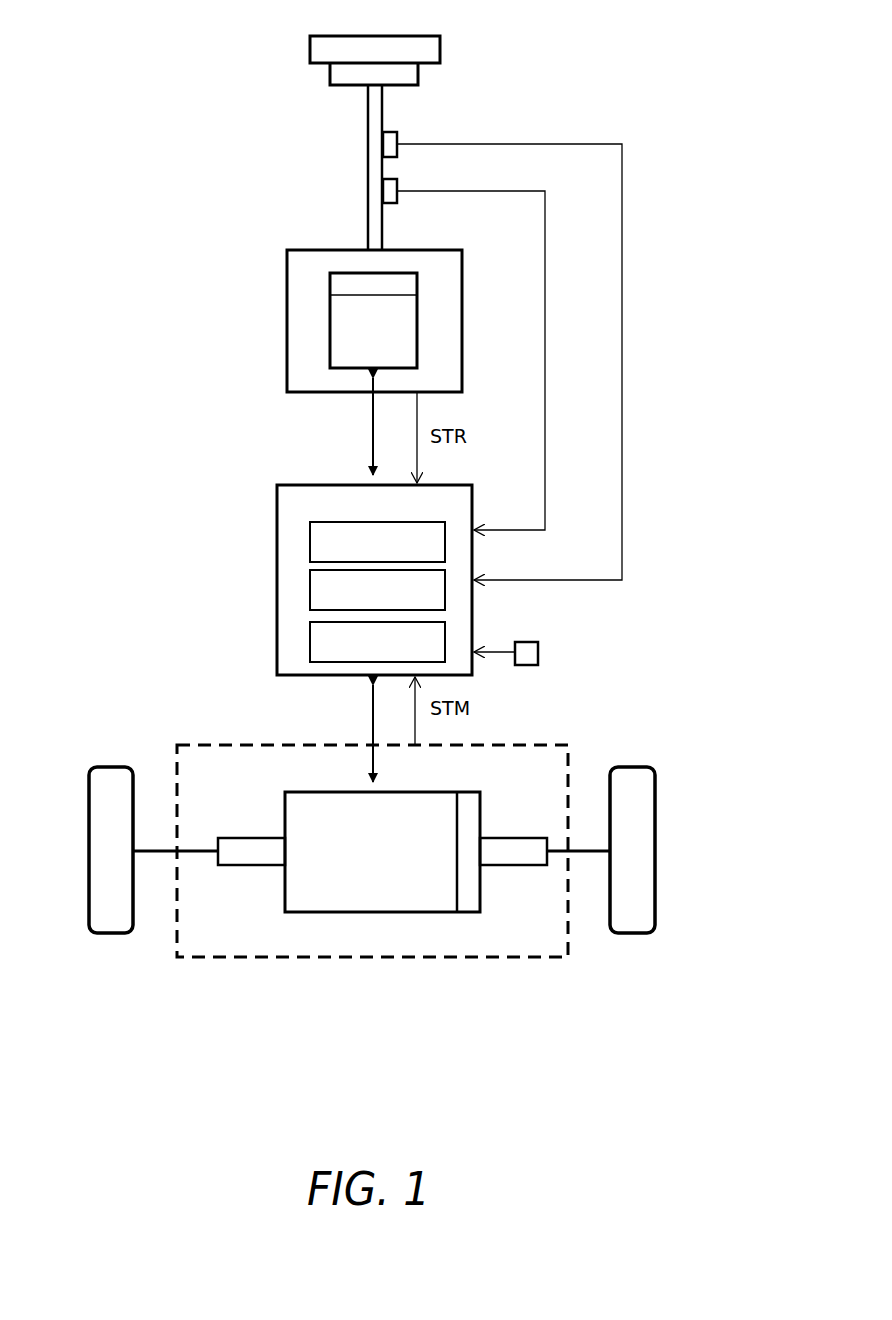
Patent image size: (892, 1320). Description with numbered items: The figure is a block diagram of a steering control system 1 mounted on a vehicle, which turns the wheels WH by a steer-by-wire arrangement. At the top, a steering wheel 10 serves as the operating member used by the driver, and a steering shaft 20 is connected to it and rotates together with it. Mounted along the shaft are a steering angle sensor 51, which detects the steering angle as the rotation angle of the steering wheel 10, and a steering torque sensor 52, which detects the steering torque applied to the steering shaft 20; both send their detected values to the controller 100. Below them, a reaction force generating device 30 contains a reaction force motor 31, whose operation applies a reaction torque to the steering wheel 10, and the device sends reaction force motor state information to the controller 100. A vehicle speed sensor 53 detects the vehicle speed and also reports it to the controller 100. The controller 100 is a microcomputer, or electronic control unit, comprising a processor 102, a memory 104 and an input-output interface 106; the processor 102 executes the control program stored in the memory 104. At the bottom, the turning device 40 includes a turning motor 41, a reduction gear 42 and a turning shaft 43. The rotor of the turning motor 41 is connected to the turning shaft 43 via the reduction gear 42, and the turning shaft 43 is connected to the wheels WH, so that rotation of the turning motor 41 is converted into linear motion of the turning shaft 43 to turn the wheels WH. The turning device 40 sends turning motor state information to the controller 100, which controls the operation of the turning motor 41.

The steering control system 1 is at (576, 108).
The steering wheel 10 is at (311, 50).
The steering shaft 20 is at (368, 100).
The reaction force generating device 30 is at (325, 250).
The reaction force motor 31 is at (330, 320).
The turning device 40 is at (372, 960).
The turning motor 41 is at (330, 912).
The reduction gear 42 is at (468, 912).
The turning shaft 43 is at (266, 868).
The steering angle sensor 51 is at (385, 145).
The steering torque sensor 52 is at (385, 192).
The vehicle speed sensor 53 is at (540, 656).
The controller 100 is at (330, 563).
The processor 102 is at (310, 542).
The memory 104 is at (310, 591).
The input-output interface 106 is at (310, 643).
The wheels WH is at (115, 934).